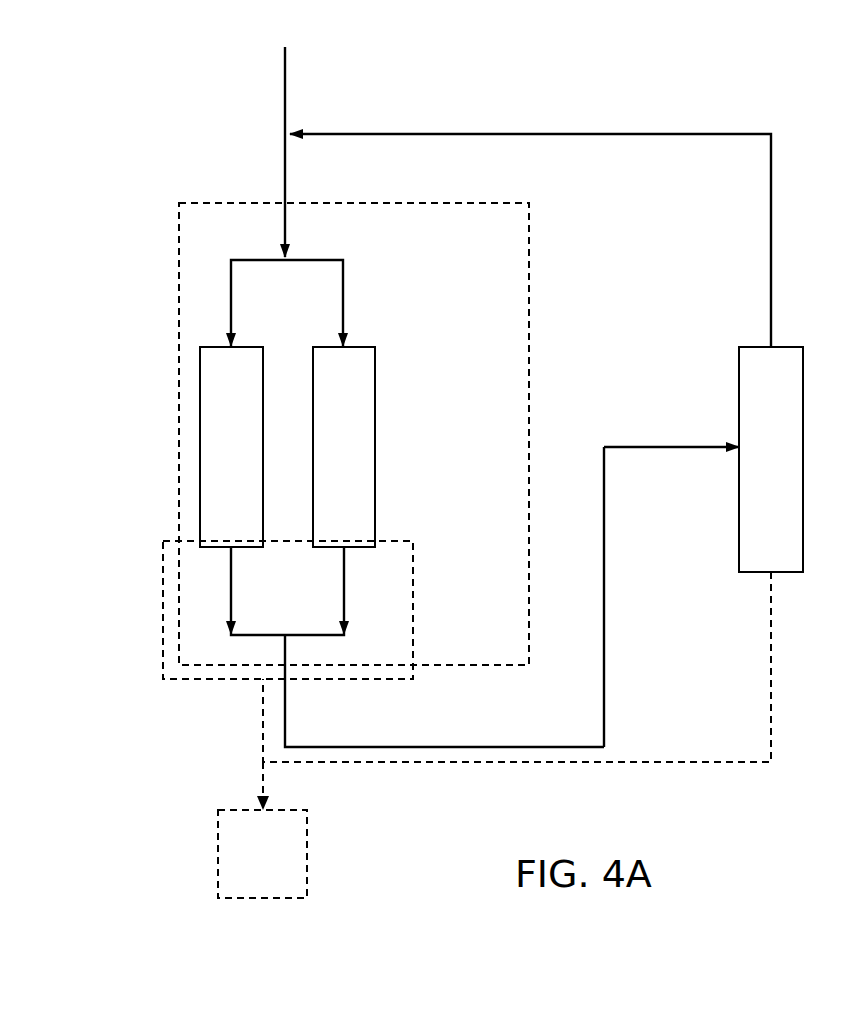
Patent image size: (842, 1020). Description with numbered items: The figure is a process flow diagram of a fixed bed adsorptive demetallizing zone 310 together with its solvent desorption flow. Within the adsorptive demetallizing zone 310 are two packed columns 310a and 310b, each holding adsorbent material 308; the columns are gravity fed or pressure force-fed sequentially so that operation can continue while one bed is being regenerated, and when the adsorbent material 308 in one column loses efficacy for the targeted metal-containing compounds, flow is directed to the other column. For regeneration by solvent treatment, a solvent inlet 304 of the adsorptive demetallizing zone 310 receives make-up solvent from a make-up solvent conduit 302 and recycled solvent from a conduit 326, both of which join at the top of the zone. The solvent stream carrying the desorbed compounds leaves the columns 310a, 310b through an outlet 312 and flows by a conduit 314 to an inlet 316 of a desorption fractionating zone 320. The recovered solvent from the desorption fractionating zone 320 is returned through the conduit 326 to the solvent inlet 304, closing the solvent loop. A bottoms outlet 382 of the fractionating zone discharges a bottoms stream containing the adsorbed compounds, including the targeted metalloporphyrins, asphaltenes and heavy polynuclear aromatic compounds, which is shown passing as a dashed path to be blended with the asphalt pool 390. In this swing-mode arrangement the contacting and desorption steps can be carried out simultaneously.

The make-up solvent conduit 302 is at (288, 100).
The solvent inlet 304 is at (288, 243).
The adsorbent material 308 is at (223, 380).
The adsorptive demetallizing zone 310 is at (354, 434).
The packed column 310a is at (231, 447).
The packed column 310b is at (344, 447).
The outlet 312 is at (357, 746).
The conduit 314 is at (606, 643).
The inlet 316 is at (668, 446).
The desorption fractionating zone 320 is at (771, 459).
The conduit 326 is at (660, 133).
The bottoms outlet 382 is at (774, 663).
The asphalt pool 390 is at (262, 854).